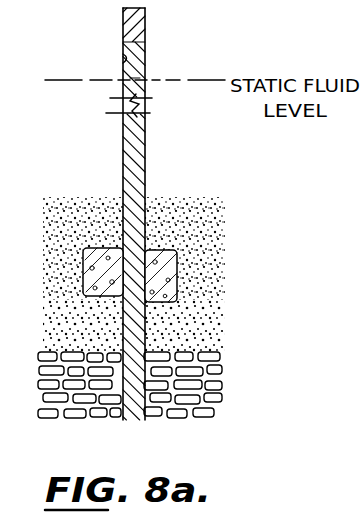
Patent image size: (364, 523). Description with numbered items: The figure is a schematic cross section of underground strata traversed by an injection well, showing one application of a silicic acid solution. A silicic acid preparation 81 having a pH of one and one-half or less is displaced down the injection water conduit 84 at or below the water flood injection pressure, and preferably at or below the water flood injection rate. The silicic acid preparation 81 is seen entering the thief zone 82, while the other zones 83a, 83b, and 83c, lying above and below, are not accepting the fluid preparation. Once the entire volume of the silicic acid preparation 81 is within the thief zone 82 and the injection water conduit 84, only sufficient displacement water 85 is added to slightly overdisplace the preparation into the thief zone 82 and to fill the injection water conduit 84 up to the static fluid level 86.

The silicic acid preparation 81 is at (137, 142).
The thief zone 82 is at (165, 260).
The other zone 83a is at (193, 238).
The other zone 83b is at (195, 339).
The other zone 83c is at (197, 395).
The injection water conduit 84 is at (123, 55).
The displacement water 85 is at (140, 23).
The static fluid level 86 is at (140, 78).